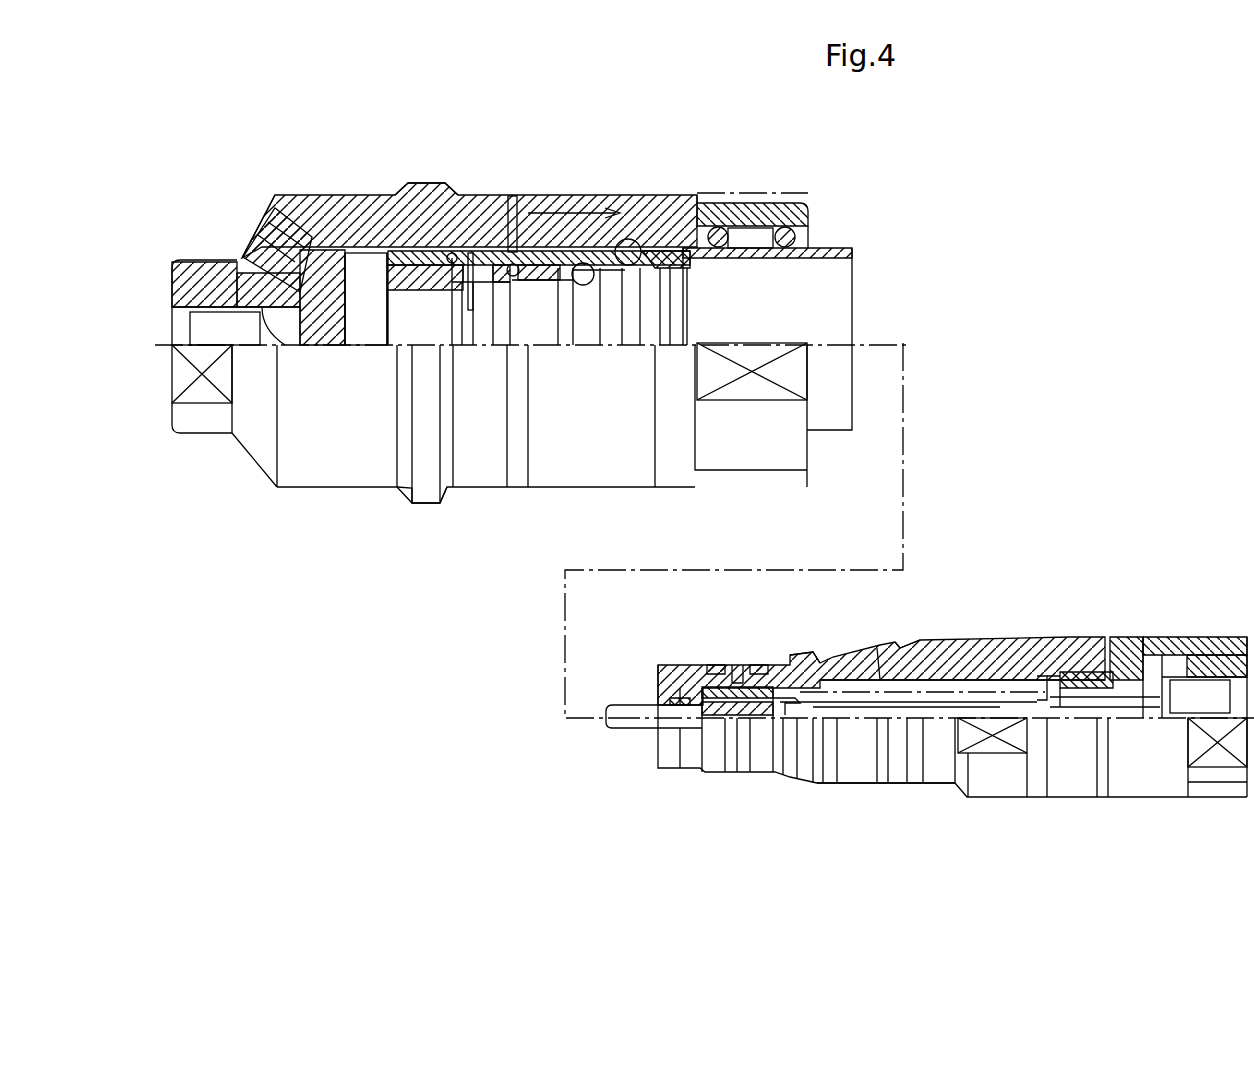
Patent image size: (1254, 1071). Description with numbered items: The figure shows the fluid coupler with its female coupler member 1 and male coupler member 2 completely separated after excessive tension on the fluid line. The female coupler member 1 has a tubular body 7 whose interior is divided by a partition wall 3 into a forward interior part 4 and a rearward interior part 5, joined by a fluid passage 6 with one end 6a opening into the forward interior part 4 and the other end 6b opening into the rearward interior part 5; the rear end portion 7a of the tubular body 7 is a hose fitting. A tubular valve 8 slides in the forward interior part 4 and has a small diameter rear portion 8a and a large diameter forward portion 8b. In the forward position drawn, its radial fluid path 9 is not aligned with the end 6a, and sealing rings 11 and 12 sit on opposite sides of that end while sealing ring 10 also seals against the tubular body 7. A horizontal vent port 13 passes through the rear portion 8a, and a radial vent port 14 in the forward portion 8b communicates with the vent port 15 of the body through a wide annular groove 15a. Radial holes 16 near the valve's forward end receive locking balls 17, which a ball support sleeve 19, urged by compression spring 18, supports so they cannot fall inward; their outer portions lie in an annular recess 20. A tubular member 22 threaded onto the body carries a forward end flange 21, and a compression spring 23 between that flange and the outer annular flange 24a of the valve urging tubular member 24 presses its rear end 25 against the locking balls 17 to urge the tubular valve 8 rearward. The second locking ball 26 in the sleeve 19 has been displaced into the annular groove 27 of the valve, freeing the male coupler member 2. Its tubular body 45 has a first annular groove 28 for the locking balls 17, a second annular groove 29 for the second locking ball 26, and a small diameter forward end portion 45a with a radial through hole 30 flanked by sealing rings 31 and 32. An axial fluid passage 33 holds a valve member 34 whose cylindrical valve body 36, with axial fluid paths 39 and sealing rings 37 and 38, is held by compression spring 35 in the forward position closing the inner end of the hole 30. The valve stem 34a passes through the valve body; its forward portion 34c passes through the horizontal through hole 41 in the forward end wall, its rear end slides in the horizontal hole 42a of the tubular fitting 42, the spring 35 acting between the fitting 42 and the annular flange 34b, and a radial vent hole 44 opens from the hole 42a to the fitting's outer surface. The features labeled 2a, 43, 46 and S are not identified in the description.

The female coupler member 1 is at (298, 178).
The male coupler member 2 is at (1023, 560).
The plug body 2a is at (678, 662).
The partition wall 3 is at (290, 360).
The forward interior part 4 is at (362, 338).
The rearward interior part 5 is at (308, 342).
The fluid passage 6 is at (350, 195).
The end of fluid passage 6a is at (421, 240).
The other end of fluid passage 6b is at (258, 248).
The tubular body 7 is at (318, 196).
The rear end portion 7a is at (198, 258).
The tubular valve 8 is at (462, 290).
The rear portion of tubular valve 8a is at (412, 502).
The forward portion of tubular valve 8b is at (562, 250).
The fluid path 9 is at (486, 250).
The sealing ring 10 is at (507, 260).
The sealing ring 11 is at (462, 250).
The sealing ring 12 is at (395, 253).
The horizontal vent port 13 is at (380, 338).
The radial vent port 14 is at (541, 247).
The vent port 15 is at (518, 195).
The annular groove 15a is at (512, 270).
The radial holes 16 is at (613, 282).
The locking ball 17 is at (624, 248).
The compression spring 18 is at (520, 287).
The ball support sleeve 19 is at (583, 290).
The annular recess 20 is at (656, 194).
The forward end flange 21 is at (803, 240).
The tubular member 22 is at (690, 205).
The compression spring 23 is at (798, 204).
The valve urging tubular member 24 is at (749, 236).
The outer annular flange 24a is at (712, 236).
The rear end 25 is at (657, 270).
The second locking ball 26 is at (573, 290).
The annular groove 27 is at (593, 250).
The first annular groove 28 is at (899, 648).
The second annular groove 29 is at (826, 658).
The radial through hole 30 is at (737, 663).
The sealing ring 31 is at (759, 662).
The sealing ring 32 is at (717, 663).
The fluid passage 33 is at (942, 700).
The valve member 34 is at (806, 765).
The valve stem 34a is at (940, 710).
The annular flange 34b is at (848, 735).
The forward portion of valve stem 34c is at (632, 727).
The compression spring 35 is at (1057, 697).
The cylindrical valve body 36 is at (737, 715).
The sealing ring 37 is at (767, 717).
The sealing ring 38 is at (700, 712).
The axial fluid paths 39 is at (748, 718).
The horizontal through hole 41 is at (668, 718).
The tubular fitting 42 is at (1176, 635).
The horizontal hole 42a is at (1115, 712).
The spring guide 43 is at (1093, 690).
The radial vent hole 44 is at (1147, 635).
The tubular body 45 is at (1027, 648).
The small diameter forward end portion 45a is at (657, 680).
The shoulder 46 is at (879, 645).
The space S is at (372, 338).